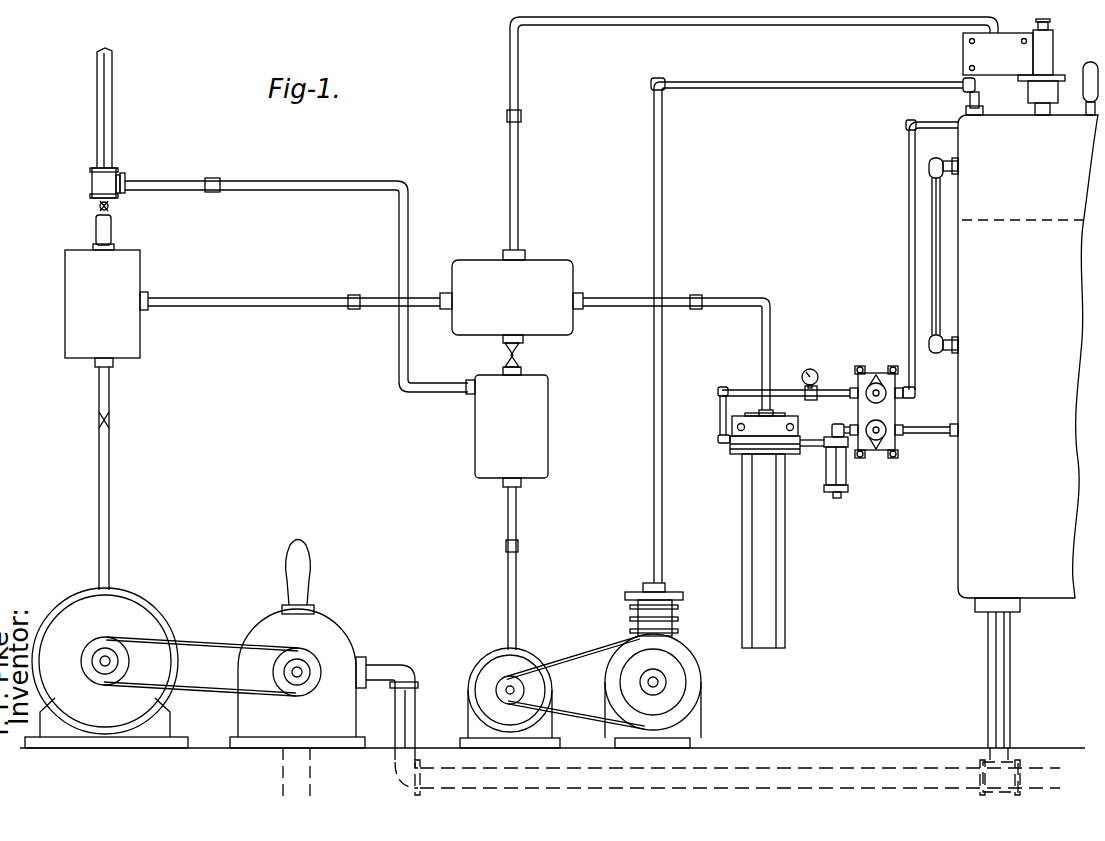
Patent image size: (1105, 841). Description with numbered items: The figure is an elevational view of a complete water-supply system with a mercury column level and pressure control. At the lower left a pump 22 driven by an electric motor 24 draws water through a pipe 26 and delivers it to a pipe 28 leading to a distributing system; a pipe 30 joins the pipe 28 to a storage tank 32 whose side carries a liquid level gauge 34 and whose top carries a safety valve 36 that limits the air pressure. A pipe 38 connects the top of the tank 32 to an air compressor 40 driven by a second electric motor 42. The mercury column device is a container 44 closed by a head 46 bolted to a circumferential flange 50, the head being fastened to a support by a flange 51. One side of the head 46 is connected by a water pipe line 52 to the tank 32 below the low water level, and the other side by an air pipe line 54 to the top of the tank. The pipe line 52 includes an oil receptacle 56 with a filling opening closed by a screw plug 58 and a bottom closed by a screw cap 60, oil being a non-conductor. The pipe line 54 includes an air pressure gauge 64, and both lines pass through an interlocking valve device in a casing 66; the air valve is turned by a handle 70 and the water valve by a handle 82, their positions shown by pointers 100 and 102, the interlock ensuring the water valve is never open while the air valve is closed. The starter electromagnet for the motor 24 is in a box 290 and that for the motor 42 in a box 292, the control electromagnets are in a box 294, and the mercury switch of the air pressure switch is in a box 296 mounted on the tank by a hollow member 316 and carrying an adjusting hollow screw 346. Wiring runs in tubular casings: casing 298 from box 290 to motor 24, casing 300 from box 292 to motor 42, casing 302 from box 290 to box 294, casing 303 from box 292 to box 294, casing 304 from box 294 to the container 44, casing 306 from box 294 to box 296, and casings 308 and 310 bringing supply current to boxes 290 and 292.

The pump 22 is at (333, 630).
The electric motor 24 is at (138, 612).
The pipe 26 is at (288, 772).
The pipe 28 is at (765, 775).
The pipe 30 is at (1000, 646).
The storage tank 32 is at (960, 547).
The liquid level gauge 34 is at (942, 280).
The safety valve 36 is at (1085, 75).
The pipe 38 is at (663, 189).
The air compressor 40 is at (630, 628).
The electric motor 42 is at (490, 678).
The container 44 is at (783, 562).
The head 46 is at (731, 443).
The circumferential flange 50 is at (732, 457).
The flange 51 is at (719, 412).
The pipe line 52 is at (810, 448).
The pipe line 54 is at (909, 186).
The oil receptacle 56 is at (847, 475).
The screw plug 58 is at (836, 426).
The screw cap 60 is at (840, 498).
The air pressure gauge 64 is at (814, 371).
The casing 66 is at (858, 381).
The handle 70 is at (908, 392).
The handle 82 is at (902, 428).
The pointer 100 is at (876, 383).
The pointer 102 is at (878, 442).
The box 290 is at (141, 345).
The box 292 is at (549, 462).
The box 294 is at (556, 265).
The box 296 is at (965, 55).
The tubular casing 298 is at (109, 470).
The tubular casing 300 is at (518, 582).
The tubular casing 302 is at (276, 297).
The tubular casing 303 is at (521, 358).
The tubular casing 304 is at (742, 297).
The tubular casing 306 is at (834, 26).
The tubular casing 308 is at (113, 234).
The tubular casing 310 is at (305, 181).
The hollow member 316 is at (1028, 93).
The hollow screw 346 is at (1051, 30).